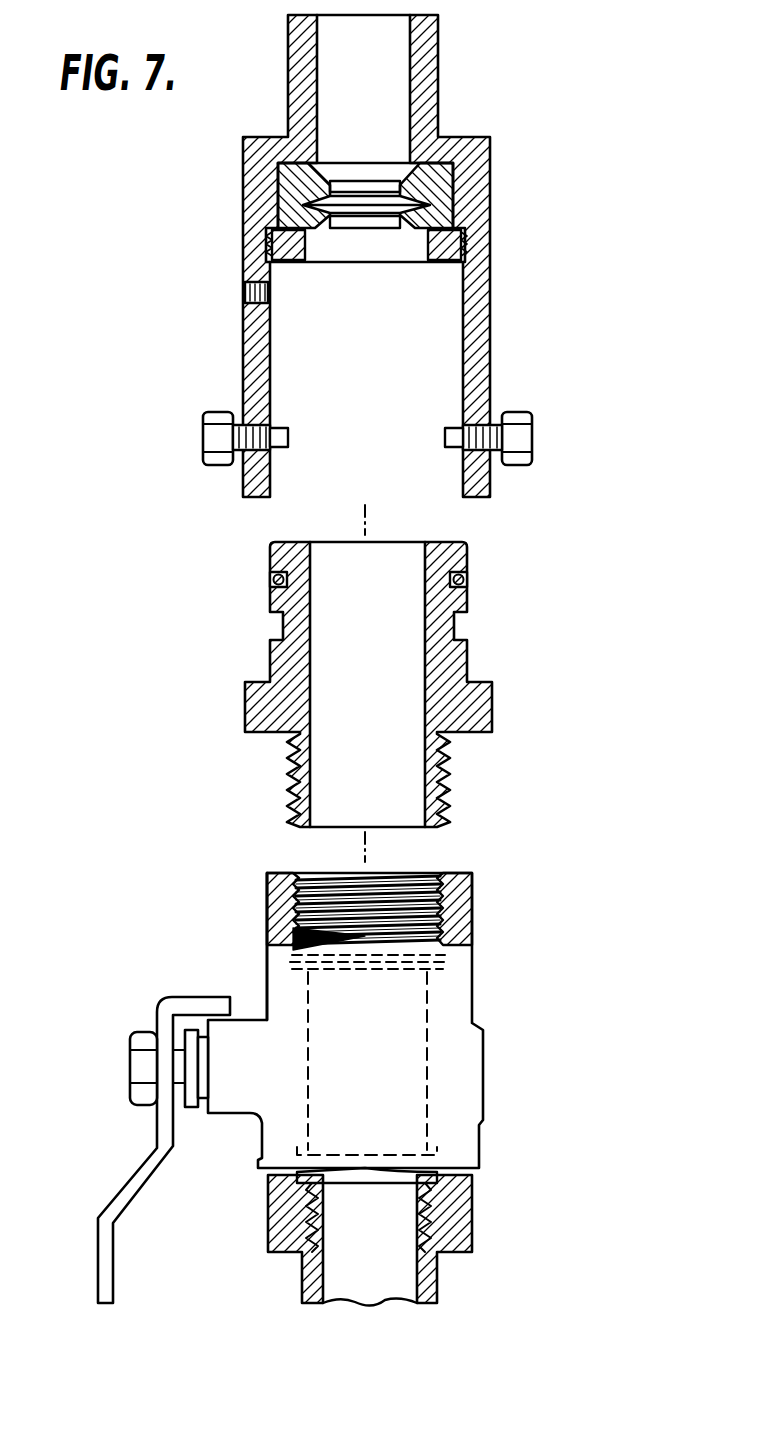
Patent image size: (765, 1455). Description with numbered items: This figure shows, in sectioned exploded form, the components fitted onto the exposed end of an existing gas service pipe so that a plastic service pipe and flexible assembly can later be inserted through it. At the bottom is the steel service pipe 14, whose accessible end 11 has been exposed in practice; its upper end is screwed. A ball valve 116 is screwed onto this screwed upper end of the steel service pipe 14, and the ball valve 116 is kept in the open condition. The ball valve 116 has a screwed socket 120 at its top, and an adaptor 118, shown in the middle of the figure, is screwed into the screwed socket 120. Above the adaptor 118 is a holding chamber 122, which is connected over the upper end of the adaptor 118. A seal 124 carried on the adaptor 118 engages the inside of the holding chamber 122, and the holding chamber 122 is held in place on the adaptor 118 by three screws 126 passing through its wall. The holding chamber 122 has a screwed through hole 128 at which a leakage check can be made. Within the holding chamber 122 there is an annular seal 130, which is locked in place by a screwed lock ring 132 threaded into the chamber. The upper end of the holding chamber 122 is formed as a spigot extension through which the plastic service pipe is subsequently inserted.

The accessible end 11 is at (360, 1195).
The steel service pipe 14 is at (427, 1278).
The ball valve 116 is at (467, 1075).
The adaptor 118 is at (480, 708).
The screwed socket 120 is at (457, 913).
The holding chamber 122 is at (483, 315).
The seal 124 is at (461, 580).
The screws 126 is at (220, 433).
The screwed through hole 128 is at (247, 298).
The annular seal 130 is at (447, 195).
The screwed lock ring 132 is at (452, 246).